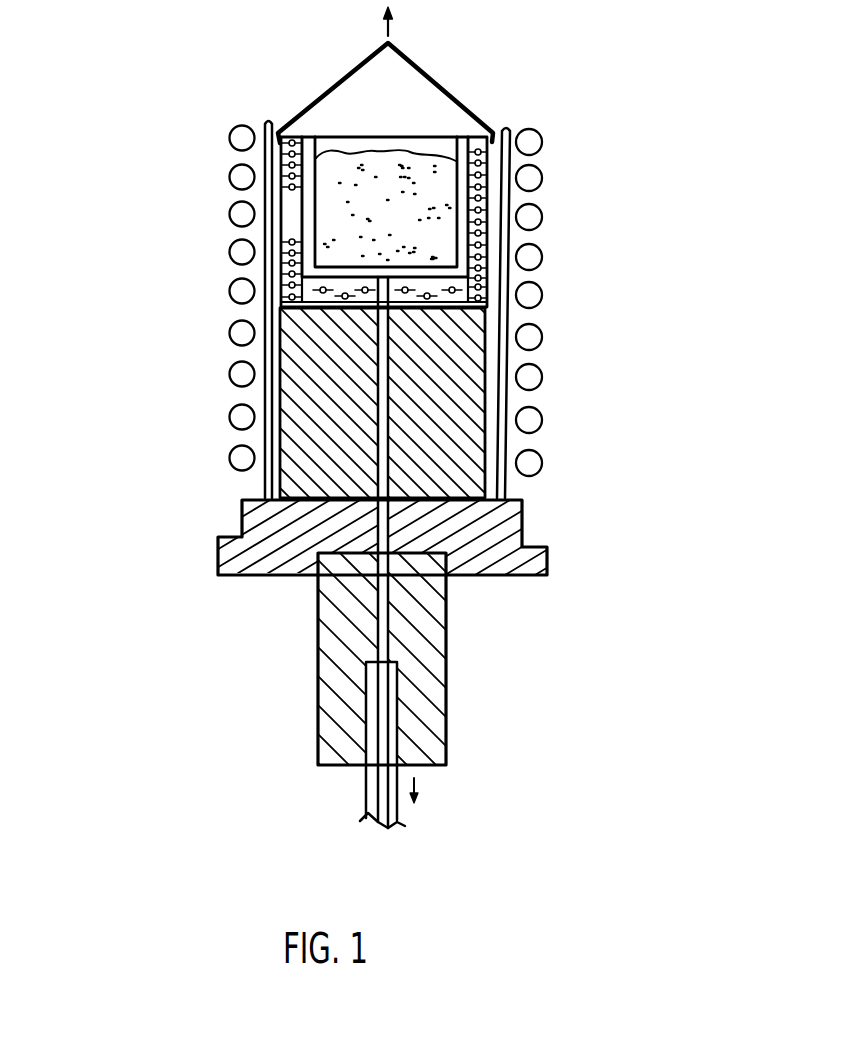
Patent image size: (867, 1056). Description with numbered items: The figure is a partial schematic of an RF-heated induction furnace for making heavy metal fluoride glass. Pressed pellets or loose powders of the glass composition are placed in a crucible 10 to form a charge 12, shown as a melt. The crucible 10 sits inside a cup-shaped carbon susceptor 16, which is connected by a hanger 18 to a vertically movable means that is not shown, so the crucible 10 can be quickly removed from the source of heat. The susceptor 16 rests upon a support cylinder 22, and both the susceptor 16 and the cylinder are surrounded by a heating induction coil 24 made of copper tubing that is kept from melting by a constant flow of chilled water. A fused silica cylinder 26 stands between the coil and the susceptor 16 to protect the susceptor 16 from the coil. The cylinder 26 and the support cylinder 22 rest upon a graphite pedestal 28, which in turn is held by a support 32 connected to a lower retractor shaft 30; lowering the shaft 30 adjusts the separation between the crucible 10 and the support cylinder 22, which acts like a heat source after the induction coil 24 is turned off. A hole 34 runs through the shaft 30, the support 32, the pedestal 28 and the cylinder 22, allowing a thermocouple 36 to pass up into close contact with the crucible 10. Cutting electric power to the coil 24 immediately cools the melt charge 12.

The crucible 10 is at (305, 207).
The charge 12 is at (335, 238).
The susceptor 16 is at (487, 233).
The hanger 18 is at (443, 89).
The support cylinder 22 is at (493, 480).
The induction coil 24 is at (542, 335).
The fused silica cylinder 26 is at (506, 128).
The graphite pedestal 28 is at (547, 565).
The lower retractor shaft 30 is at (365, 799).
The support 32 is at (318, 660).
The hole 34 is at (397, 696).
The thermocouple 36 is at (380, 437).